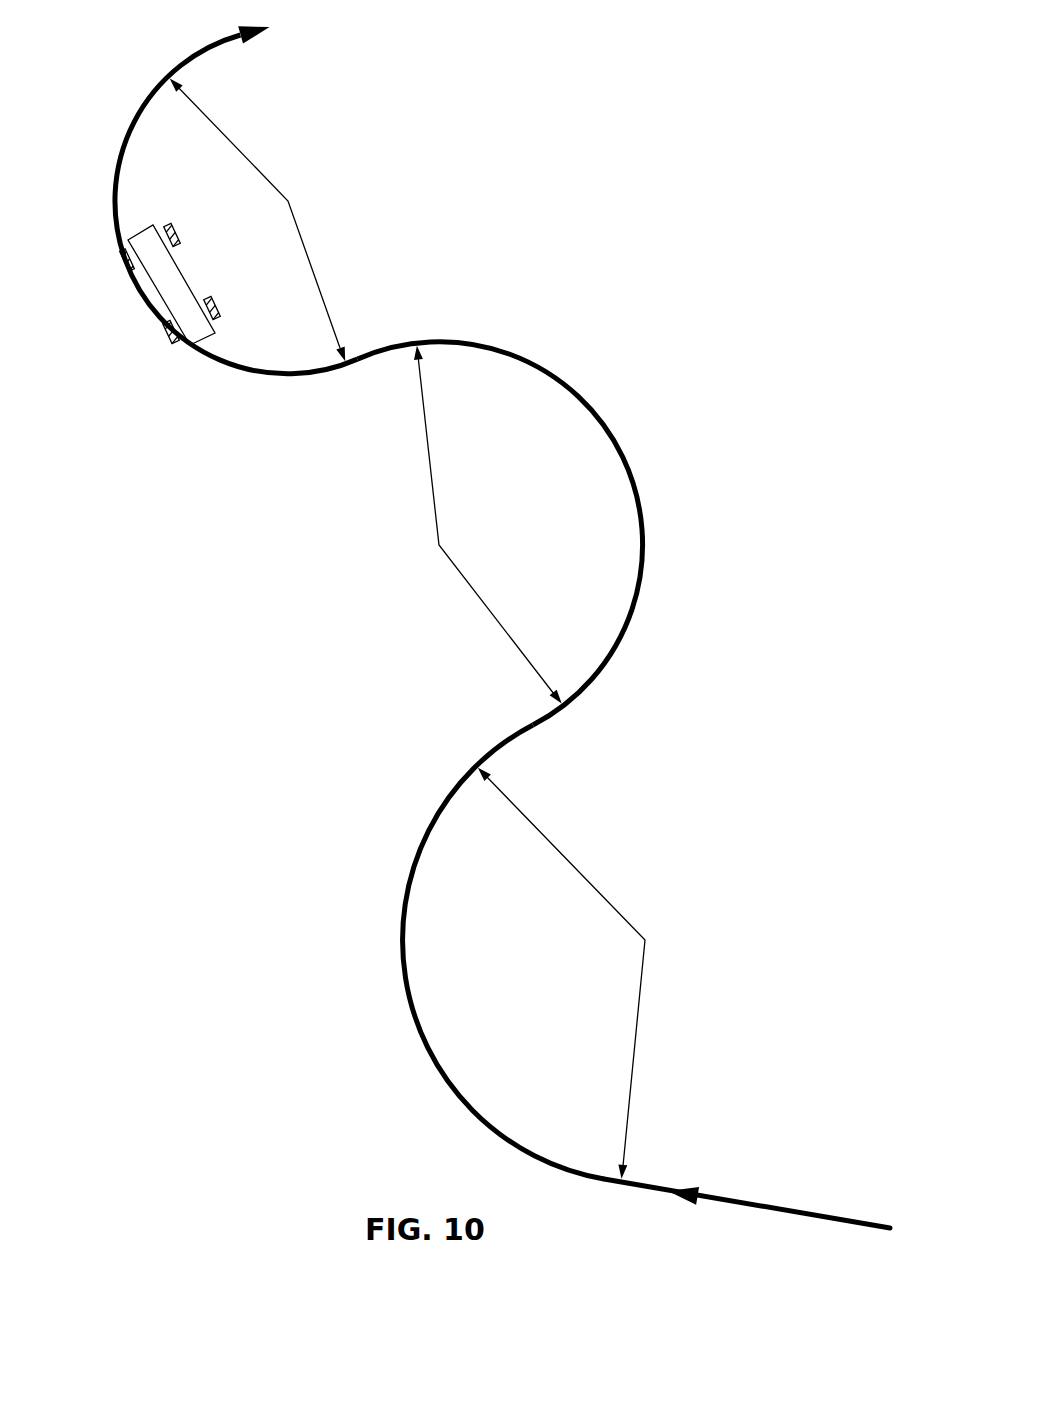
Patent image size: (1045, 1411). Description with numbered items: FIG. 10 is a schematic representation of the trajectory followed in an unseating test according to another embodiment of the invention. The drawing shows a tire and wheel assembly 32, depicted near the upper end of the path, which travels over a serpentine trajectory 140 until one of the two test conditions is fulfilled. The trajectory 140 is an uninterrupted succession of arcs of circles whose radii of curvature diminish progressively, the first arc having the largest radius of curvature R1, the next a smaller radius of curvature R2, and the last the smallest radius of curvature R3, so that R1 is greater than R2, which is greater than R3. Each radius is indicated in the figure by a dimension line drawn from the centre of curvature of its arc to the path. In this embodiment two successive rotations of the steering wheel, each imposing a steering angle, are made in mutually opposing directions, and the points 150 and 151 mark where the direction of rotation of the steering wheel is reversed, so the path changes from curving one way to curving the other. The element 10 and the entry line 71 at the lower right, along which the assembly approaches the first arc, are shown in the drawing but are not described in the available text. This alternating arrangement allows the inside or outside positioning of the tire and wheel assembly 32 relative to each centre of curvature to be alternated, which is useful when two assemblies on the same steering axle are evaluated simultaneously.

The electronic device 10 is at (183, 290).
The tire and wheel assembly 32 is at (108, 263).
The entry path 71 is at (812, 1205).
The trajectory 140 is at (403, 944).
The point 150 is at (505, 725).
The point 151 is at (373, 332).
The radius of curvature R1 is at (561, 973).
The radius of curvature R2 is at (488, 525).
The radius of curvature R3 is at (258, 220).